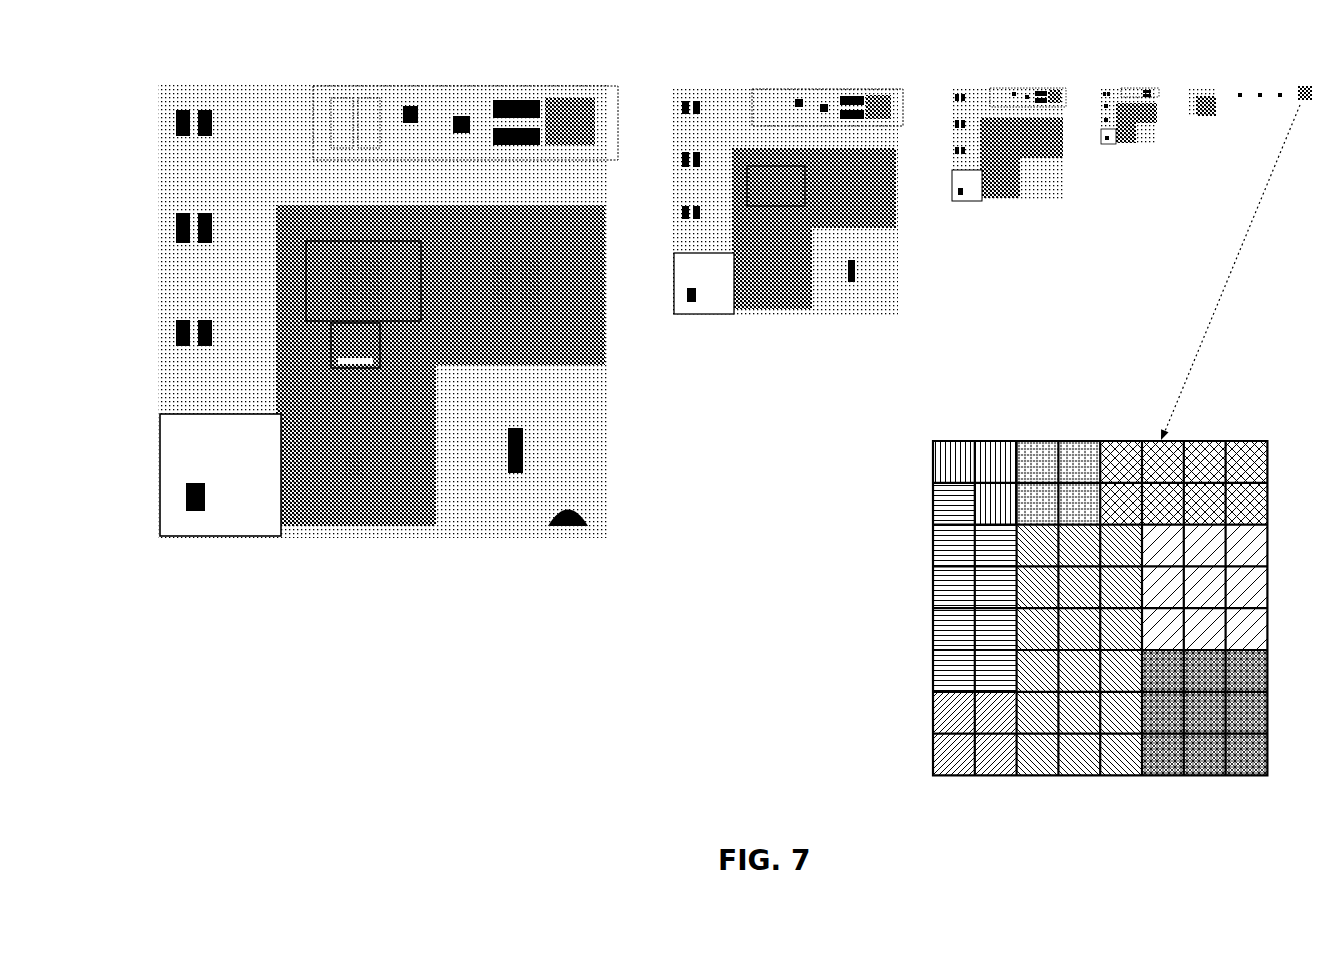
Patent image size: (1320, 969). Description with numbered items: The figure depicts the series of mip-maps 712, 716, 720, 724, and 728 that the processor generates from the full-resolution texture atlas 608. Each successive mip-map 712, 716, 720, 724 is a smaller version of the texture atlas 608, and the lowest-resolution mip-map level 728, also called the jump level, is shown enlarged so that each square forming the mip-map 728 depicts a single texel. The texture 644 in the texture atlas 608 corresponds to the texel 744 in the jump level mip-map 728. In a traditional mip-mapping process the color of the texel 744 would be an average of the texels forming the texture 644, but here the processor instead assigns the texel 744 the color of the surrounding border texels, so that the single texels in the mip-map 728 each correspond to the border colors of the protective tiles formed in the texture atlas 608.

The texture atlas 608 is at (388, 278).
The texture 644 is at (373, 265).
The mip-map 712 is at (705, 83).
The mip-map 716 is at (957, 83).
The mip-map 720 is at (1097, 83).
The mip-map 724 is at (1188, 80).
The lowest-resolution mip-map level 728 is at (1122, 430).
The texel 744 is at (1083, 578).